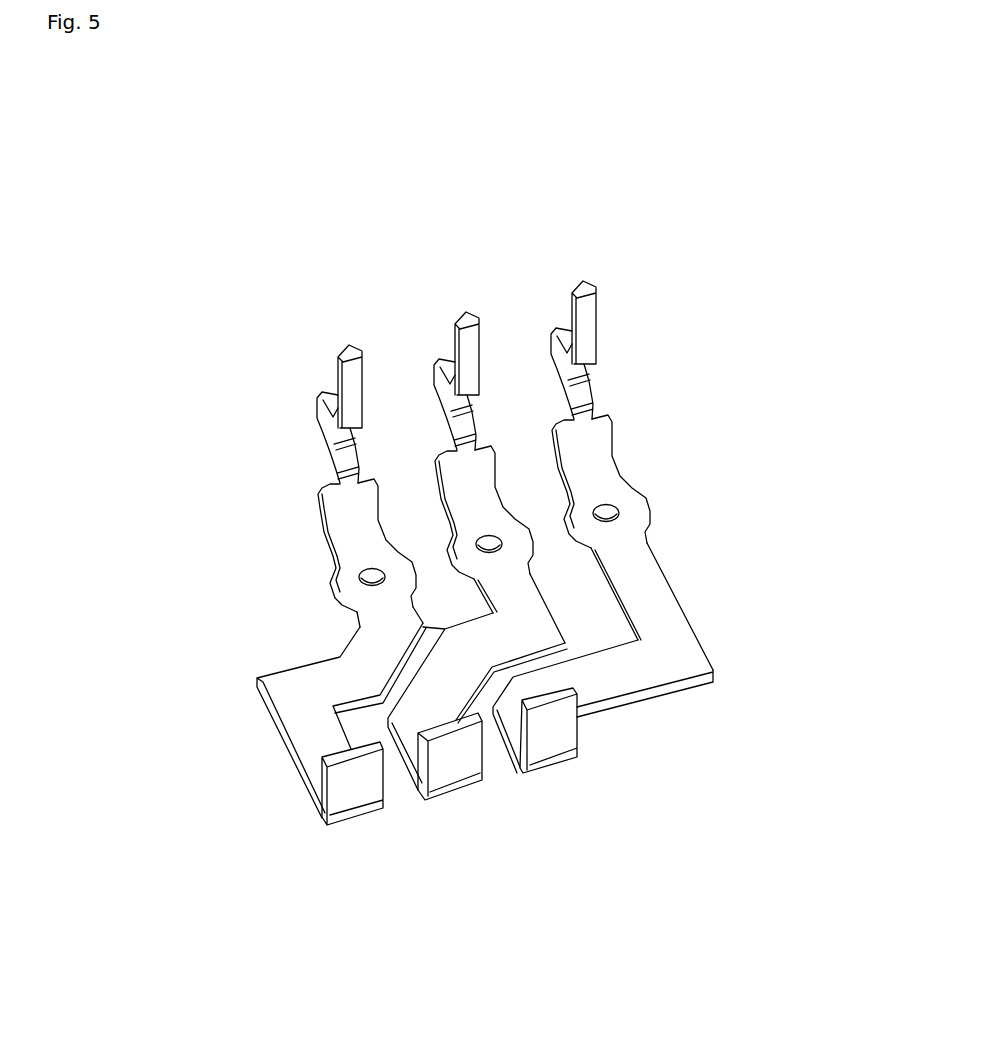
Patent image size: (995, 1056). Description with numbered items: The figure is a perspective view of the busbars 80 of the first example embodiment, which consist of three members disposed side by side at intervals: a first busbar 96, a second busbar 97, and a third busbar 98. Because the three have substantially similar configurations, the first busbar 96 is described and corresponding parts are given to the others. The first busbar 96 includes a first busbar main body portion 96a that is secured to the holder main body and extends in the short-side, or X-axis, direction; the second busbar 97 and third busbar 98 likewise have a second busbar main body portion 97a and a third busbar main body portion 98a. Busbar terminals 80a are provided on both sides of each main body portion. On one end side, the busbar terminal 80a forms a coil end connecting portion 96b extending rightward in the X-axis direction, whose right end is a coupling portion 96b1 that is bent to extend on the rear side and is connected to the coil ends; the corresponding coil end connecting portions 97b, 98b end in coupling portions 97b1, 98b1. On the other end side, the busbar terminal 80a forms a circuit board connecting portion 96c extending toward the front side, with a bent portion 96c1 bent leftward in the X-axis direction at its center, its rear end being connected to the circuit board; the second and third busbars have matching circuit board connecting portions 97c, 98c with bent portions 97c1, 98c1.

The busbar 80 is at (318, 308).
The busbar terminal 80a is at (647, 570).
The first busbar 96 is at (344, 338).
The first busbar main body portion 96a is at (382, 609).
The coil end connecting portion 96b is at (280, 740).
The coupling portion 96b1 is at (340, 803).
The circuit board connecting portion 96c is at (337, 374).
The bent portion 96c1 is at (318, 401).
The second busbar 97 is at (461, 305).
The second busbar main body portion 97a is at (518, 597).
The coil end connecting portion 97b is at (425, 697).
The coupling portion 97b1 is at (446, 780).
The circuit board connecting portion 97c is at (453, 347).
The bent portion 97c1 is at (437, 375).
The third busbar 98 is at (577, 273).
The third busbar main body portion 98a is at (632, 542).
The coil end connecting portion 98b is at (637, 692).
The coupling portion 98b1 is at (538, 757).
The circuit board connecting portion 98c is at (570, 308).
The bent portion 98c1 is at (548, 341).